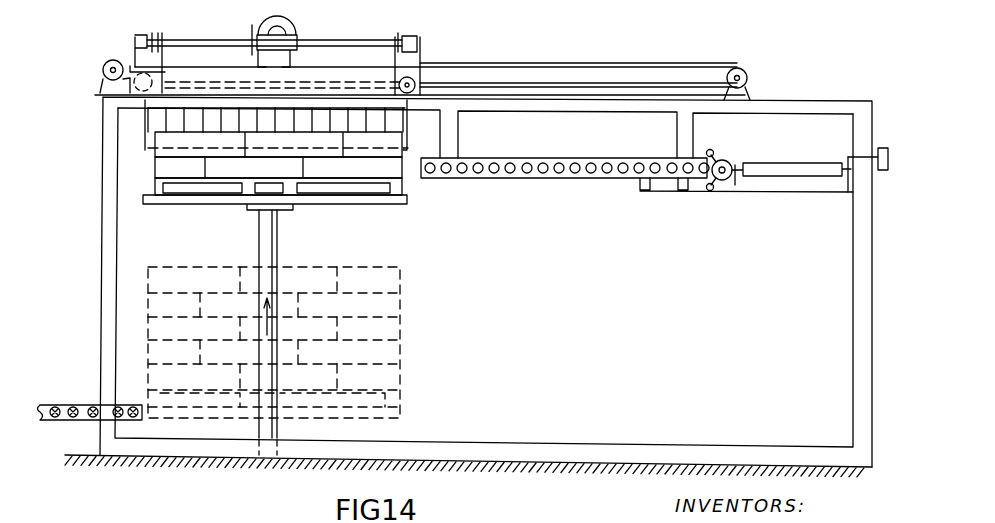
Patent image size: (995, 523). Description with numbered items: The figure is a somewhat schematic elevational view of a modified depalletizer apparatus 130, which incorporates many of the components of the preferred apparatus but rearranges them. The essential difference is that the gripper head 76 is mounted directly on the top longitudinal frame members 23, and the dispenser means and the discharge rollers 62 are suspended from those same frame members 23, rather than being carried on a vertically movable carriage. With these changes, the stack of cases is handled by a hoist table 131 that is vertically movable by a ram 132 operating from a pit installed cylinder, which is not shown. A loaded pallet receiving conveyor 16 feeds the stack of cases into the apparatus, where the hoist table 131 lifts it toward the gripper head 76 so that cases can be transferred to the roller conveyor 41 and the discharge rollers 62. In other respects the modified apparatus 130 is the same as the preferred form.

The modified apparatus 130 is at (94, 227).
The longitudinal members 23 is at (790, 102).
The gripper head 76 is at (340, 35).
The hoist table 131 is at (358, 206).
The ram 132 is at (258, 251).
The roller conveyor 41 is at (598, 186).
The discharge rollers 62 is at (779, 172).
The loaded pallet receiving conveyor 16 is at (62, 402).